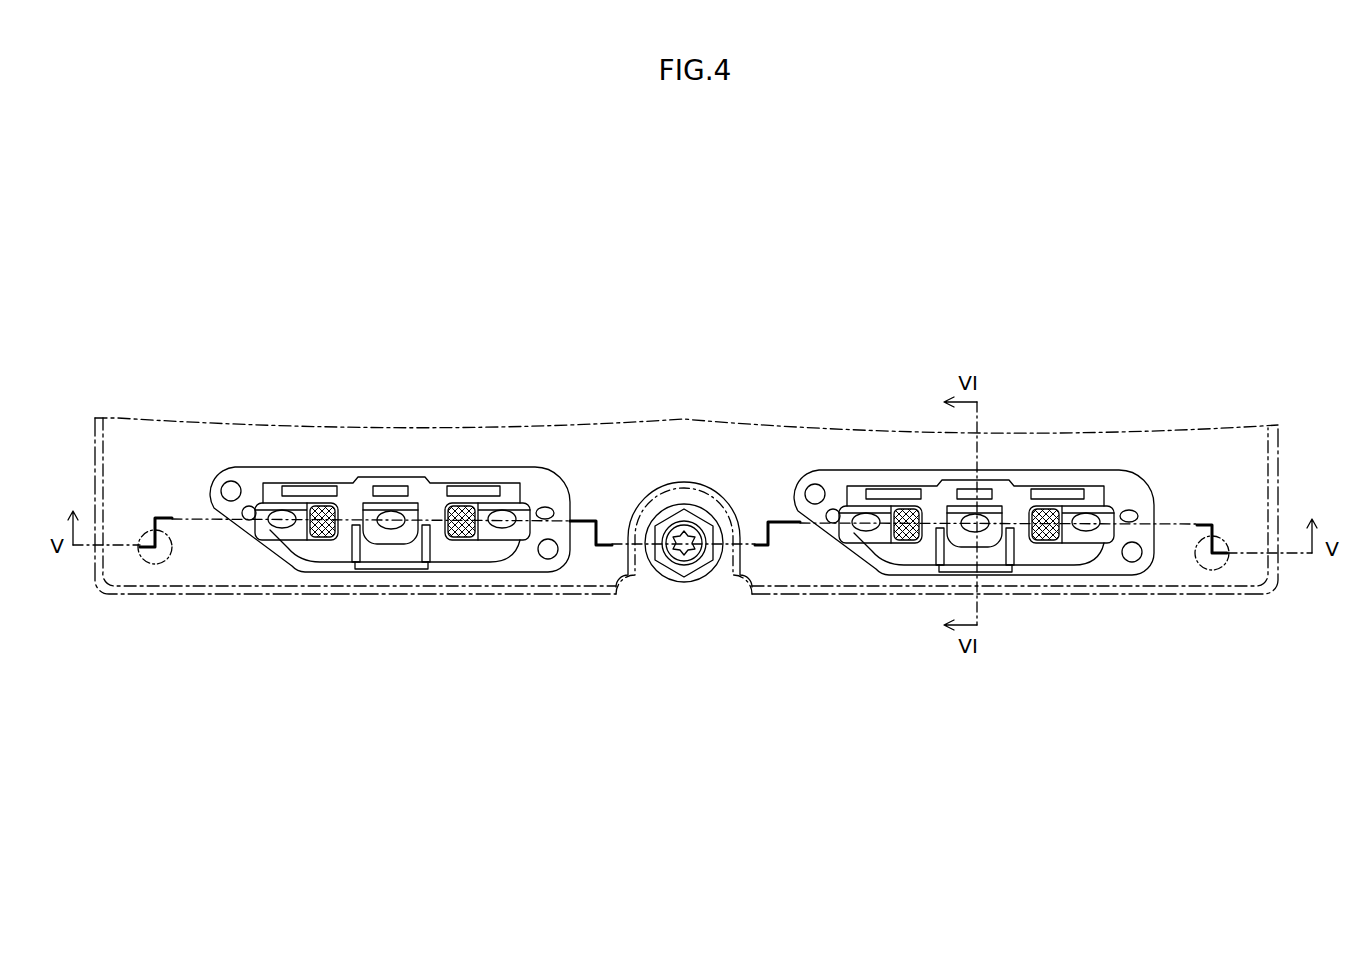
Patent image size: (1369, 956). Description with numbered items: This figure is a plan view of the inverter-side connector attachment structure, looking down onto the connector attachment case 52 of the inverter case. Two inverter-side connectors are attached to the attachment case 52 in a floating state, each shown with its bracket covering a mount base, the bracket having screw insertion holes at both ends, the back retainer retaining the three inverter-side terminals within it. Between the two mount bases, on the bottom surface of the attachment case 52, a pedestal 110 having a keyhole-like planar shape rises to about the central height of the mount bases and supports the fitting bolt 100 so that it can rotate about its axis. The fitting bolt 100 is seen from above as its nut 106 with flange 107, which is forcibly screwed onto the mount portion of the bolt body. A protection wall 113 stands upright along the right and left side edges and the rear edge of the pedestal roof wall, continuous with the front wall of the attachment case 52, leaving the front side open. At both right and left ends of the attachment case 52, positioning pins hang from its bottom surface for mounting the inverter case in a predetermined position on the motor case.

The connector attachment case 52 is at (1088, 597).
The fitting bolt 100 is at (702, 512).
The nut 106 is at (668, 525).
The flange 107 is at (708, 513).
The pedestal 110 is at (678, 595).
The protection wall 113 is at (690, 483).